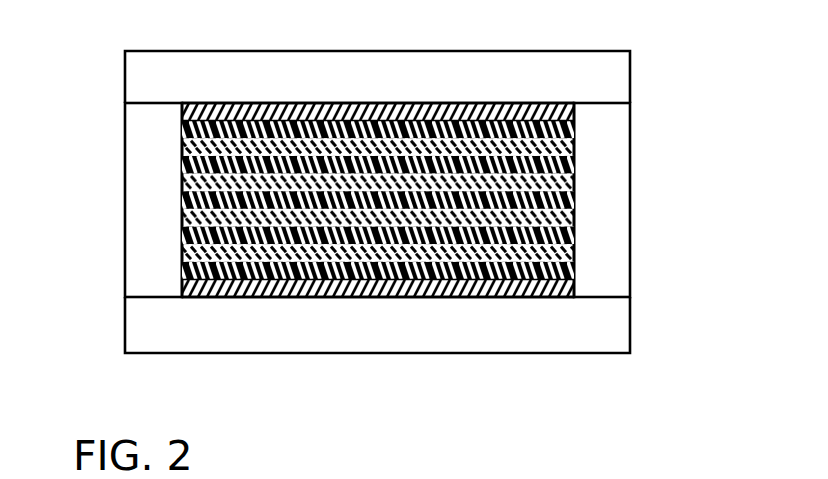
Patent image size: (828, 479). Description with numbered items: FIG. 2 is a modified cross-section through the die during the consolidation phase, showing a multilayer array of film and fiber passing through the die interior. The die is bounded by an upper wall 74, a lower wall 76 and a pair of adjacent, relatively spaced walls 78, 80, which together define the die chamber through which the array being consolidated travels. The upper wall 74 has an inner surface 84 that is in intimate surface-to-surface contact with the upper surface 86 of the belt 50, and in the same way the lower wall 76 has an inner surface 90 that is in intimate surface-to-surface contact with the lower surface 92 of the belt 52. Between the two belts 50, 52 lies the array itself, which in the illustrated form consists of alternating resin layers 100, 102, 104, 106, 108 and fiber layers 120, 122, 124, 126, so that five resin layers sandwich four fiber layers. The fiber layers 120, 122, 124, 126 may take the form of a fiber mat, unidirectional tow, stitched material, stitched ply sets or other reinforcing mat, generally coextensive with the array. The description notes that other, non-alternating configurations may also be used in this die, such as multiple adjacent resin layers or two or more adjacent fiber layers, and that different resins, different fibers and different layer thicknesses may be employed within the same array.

The belt 50 is at (574, 113).
The belt 52 is at (578, 287).
The upper wall 74 is at (500, 65).
The lower wall 76 is at (482, 353).
The relatively spaced wall 78 is at (608, 117).
The relatively spaced wall 80 is at (145, 198).
The inner surface 84 is at (322, 116).
The upper surface 86 is at (457, 102).
The inner surface 90 is at (447, 284).
The lower surface 92 is at (312, 297).
The resin layer 100 is at (183, 125).
The resin layer 102 is at (183, 162).
The resin layer 104 is at (183, 197).
The resin layer 106 is at (183, 233).
The resin layer 108 is at (183, 272).
The fiber layer 120 is at (574, 150).
The fiber layer 122 is at (575, 180).
The fiber layer 124 is at (575, 218).
The fiber layer 126 is at (575, 255).